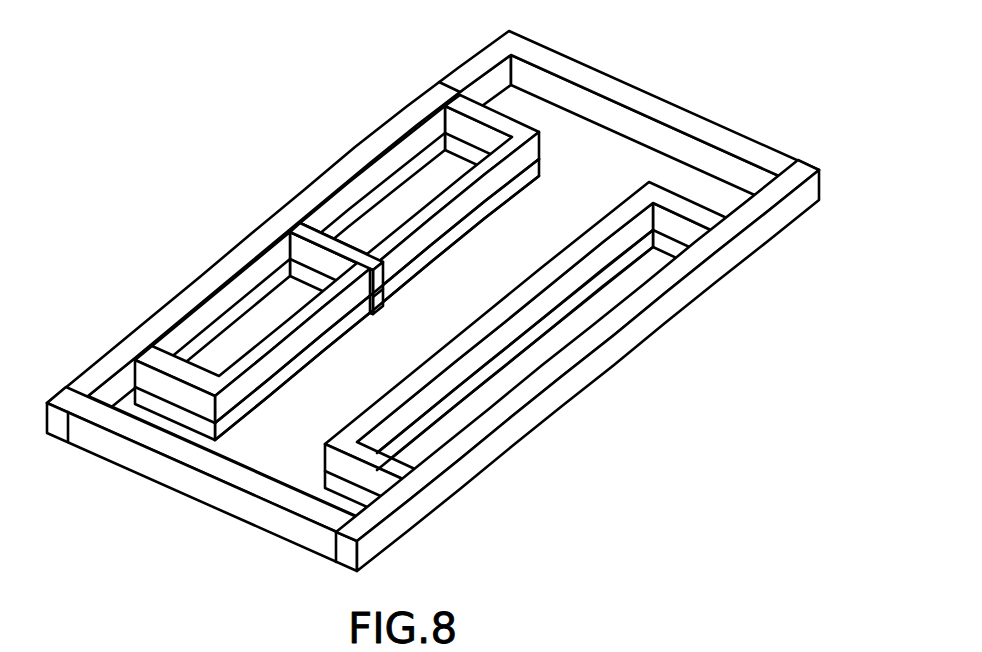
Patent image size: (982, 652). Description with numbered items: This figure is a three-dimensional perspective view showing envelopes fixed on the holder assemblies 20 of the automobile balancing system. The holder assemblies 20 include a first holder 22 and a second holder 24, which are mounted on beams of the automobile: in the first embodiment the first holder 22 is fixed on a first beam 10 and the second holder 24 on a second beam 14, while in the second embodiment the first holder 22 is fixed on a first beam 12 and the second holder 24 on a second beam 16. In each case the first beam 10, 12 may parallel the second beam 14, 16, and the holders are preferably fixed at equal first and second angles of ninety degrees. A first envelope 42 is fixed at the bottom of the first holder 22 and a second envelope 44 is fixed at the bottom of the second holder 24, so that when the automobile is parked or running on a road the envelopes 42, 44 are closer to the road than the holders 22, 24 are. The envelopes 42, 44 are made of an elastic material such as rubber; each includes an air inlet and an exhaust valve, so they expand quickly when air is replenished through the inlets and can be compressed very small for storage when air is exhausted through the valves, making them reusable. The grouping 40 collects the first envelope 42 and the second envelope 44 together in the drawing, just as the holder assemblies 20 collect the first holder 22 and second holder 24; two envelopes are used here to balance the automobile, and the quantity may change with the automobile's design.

The first beam 10 is at (442, 292).
The first beam 12 is at (579, 77).
The second beam 14 is at (714, 267).
The second beam 16 is at (180, 473).
The holder assemblies 20 is at (480, 309).
The first holder 22 is at (410, 146).
The second holder 24 is at (593, 232).
The base strip assembly 40 is at (441, 349).
The first envelope 42 is at (318, 342).
The second envelope 44 is at (450, 395).